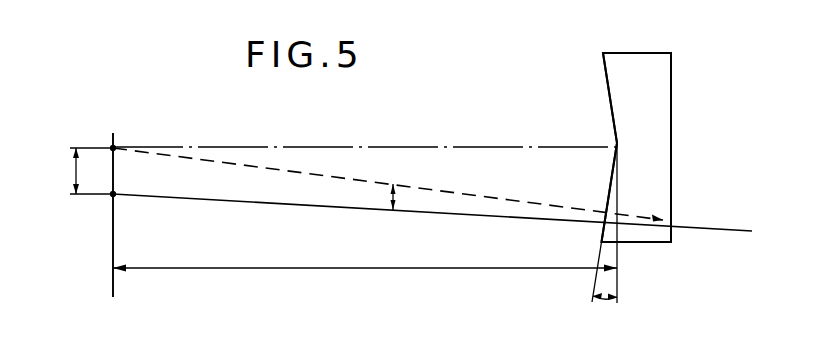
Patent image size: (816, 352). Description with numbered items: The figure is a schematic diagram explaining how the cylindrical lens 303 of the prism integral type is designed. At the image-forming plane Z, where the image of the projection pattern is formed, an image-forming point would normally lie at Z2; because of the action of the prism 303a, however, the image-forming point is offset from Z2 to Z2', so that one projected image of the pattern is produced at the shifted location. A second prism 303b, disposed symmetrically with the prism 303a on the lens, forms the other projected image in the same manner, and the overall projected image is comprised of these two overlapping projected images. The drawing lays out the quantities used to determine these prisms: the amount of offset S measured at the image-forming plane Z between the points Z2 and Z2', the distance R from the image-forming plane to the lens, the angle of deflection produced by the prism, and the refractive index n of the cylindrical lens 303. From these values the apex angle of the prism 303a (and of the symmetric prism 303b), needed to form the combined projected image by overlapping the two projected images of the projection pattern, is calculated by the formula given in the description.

The cylindrical lens 303 is at (673, 123).
The prism 303a is at (612, 200).
The prism 303b is at (618, 92).
The refractive index n is at (640, 53).
The image-forming point Z2 is at (126, 130).
The offset image-forming point Z2' is at (95, 218).
The image-forming plane Z is at (114, 280).
The amount of offset S is at (76, 172).
The distance R is at (380, 267).